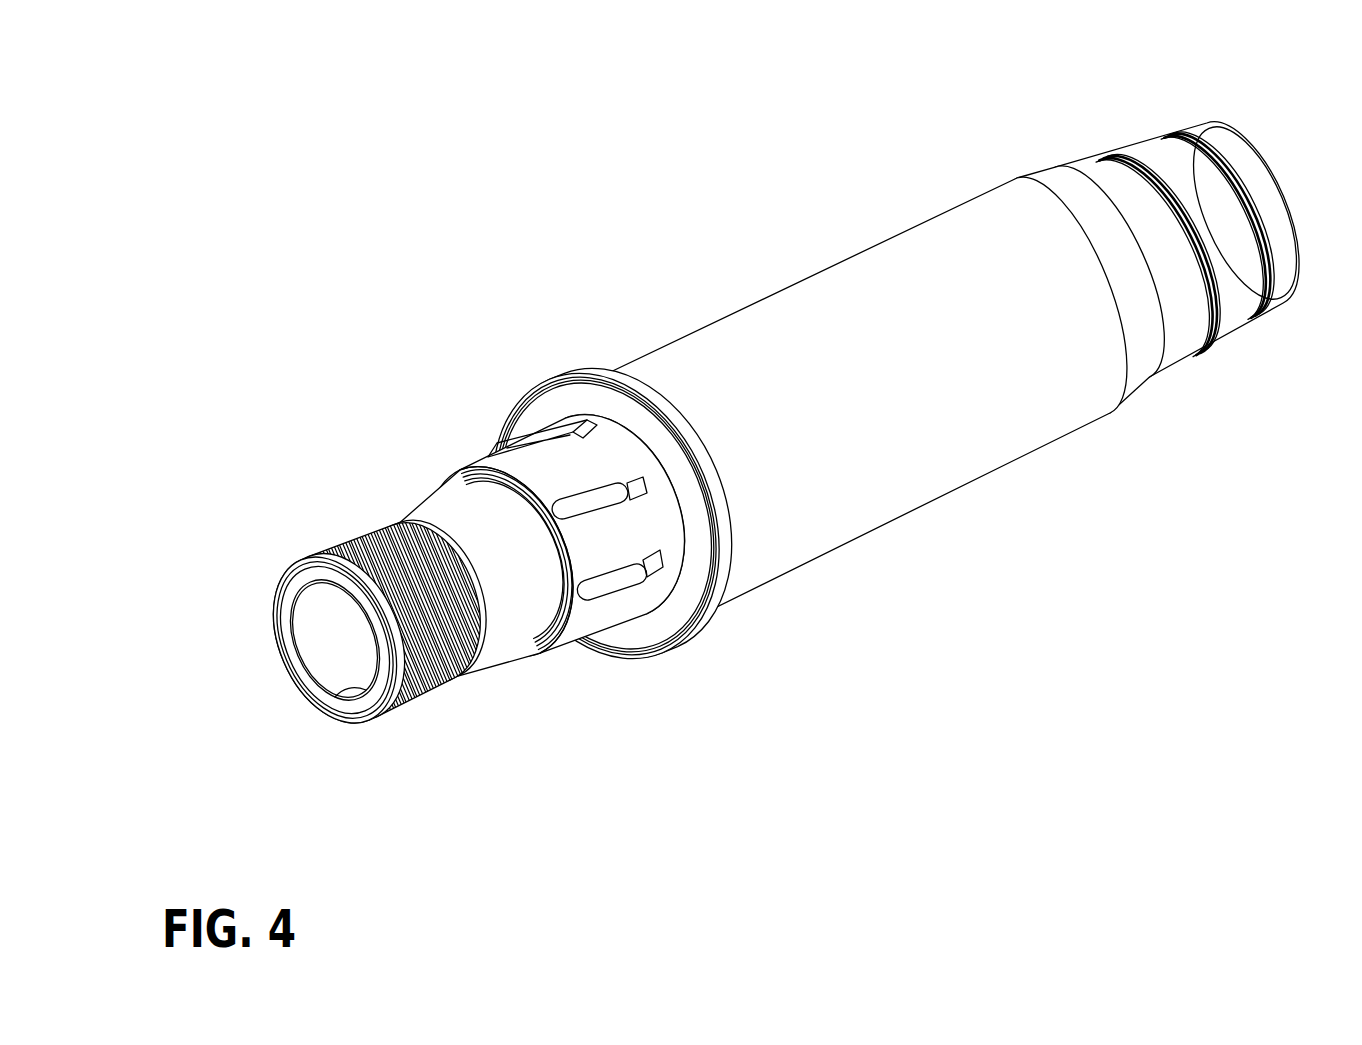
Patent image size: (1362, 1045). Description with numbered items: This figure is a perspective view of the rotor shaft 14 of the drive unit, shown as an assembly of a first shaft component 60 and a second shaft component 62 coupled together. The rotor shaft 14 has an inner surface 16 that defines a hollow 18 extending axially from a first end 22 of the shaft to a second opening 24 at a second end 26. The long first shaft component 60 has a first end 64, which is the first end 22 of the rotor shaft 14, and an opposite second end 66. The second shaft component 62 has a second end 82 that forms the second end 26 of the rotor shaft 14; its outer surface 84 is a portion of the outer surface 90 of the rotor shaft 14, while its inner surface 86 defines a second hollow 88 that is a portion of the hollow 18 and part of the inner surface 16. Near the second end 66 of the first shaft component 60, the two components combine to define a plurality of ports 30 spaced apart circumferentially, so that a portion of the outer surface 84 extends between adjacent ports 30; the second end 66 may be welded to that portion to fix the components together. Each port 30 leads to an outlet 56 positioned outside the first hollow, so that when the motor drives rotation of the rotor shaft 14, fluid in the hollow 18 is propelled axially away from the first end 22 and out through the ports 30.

The rotor shaft 14 is at (852, 314).
The inner surface 16 is at (330, 647).
The hollow 18 is at (360, 677).
The first end 22 is at (1243, 133).
The second opening 24 is at (360, 697).
The second end 26 is at (283, 663).
The ports 30 is at (593, 427).
The outlets 56 is at (573, 433).
The first shaft component 60 is at (789, 296).
The second shaft component 62 is at (427, 497).
The first end 64 is at (1277, 160).
The second end 66 is at (670, 607).
The second end 82 is at (277, 585).
The outer surface 84 is at (517, 655).
The inner surface 86 is at (308, 597).
The second hollow 88 is at (285, 613).
The outer surface 90 is at (533, 617).